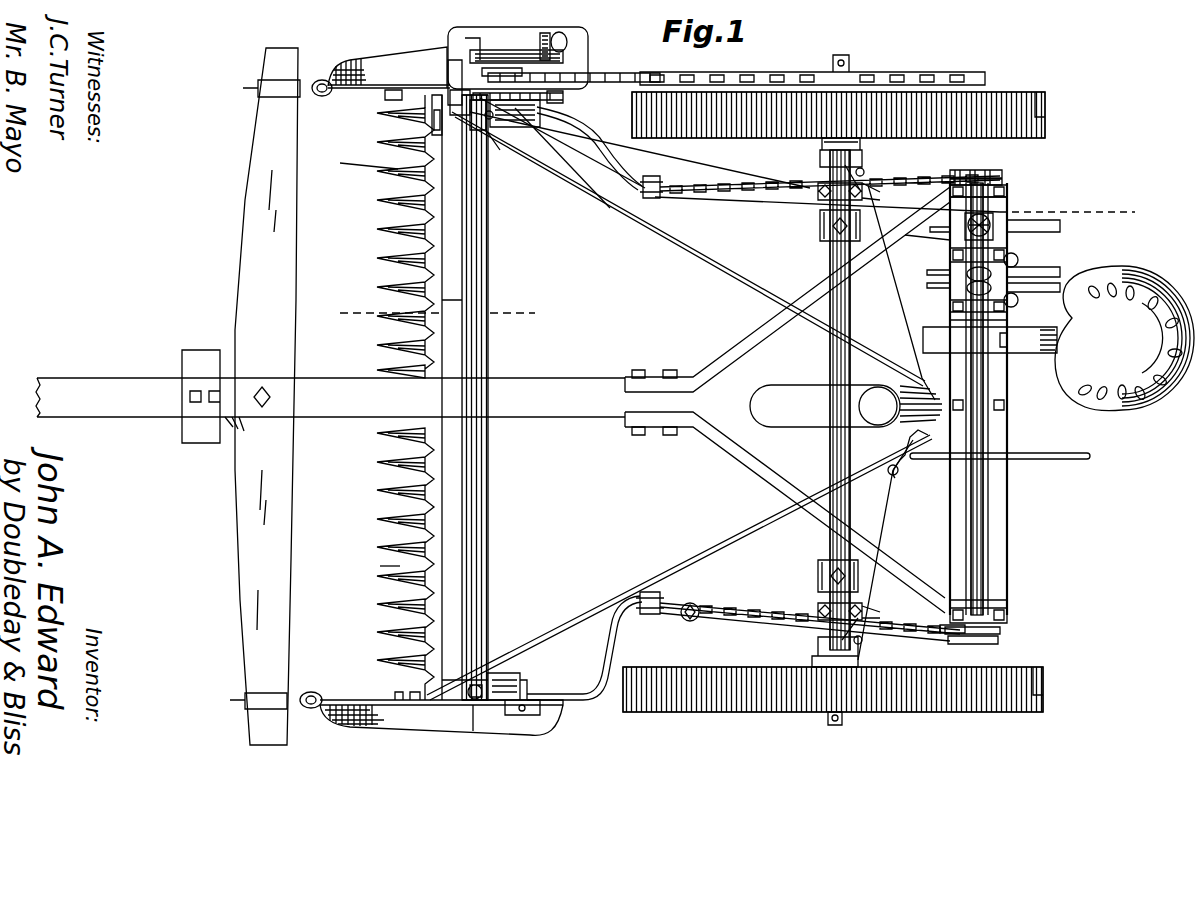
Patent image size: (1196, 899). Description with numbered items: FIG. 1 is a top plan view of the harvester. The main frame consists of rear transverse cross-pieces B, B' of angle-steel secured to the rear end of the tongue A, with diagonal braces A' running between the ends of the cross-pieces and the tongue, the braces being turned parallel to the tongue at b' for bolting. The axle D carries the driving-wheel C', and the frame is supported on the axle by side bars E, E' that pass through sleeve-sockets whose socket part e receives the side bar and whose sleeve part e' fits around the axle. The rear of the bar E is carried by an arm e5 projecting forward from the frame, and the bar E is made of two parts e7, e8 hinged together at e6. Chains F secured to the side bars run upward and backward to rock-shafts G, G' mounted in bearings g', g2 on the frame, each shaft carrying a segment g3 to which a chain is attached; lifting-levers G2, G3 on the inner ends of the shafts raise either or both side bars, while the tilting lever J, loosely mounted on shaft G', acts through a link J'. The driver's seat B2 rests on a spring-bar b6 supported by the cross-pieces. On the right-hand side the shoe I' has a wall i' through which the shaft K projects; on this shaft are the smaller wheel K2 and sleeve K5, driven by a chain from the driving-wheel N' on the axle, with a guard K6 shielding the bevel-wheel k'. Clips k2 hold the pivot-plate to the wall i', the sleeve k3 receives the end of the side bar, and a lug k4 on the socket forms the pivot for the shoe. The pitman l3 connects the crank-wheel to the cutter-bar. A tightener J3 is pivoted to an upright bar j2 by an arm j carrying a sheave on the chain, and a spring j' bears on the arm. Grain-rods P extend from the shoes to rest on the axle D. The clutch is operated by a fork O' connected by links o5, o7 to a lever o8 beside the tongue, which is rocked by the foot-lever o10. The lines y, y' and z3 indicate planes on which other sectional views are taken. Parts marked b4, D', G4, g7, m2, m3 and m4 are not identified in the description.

The tongue A is at (330, 387).
The diagonal braces A' is at (787, 400).
The front ends of braces b' is at (654, 408).
The rear transverse cross-piece B is at (986, 404).
The rear transverse cross-piece B' is at (903, 545).
The driver's seat B2 is at (1124, 338).
The bracket b4 is at (997, 355).
The spring-bar b6 is at (1050, 355).
The driving-wheel C' is at (834, 406).
The axle D is at (856, 400).
The shaft bearings D' is at (823, 402).
The side bar E is at (710, 597).
The side bar E' is at (682, 203).
The socket part e is at (826, 401).
The sleeve part e' is at (873, 400).
The arm e5 is at (915, 628).
The hinge e6 is at (690, 606).
The side bar part e7 is at (590, 650).
The side bar part e8 is at (745, 612).
The chains F is at (765, 193).
The rock-shaft G is at (984, 399).
The rock-shaft G' is at (1072, 263).
The lifting-lever G2 is at (950, 300).
The lifting-lever G3 is at (950, 250).
The lever arm G4 is at (1060, 226).
The bearing g' is at (1000, 466).
The bearing g2 is at (1004, 186).
The segment g3 is at (1005, 174).
The bar g7 is at (1007, 204).
The shoe I' is at (441, 392).
The wall of shoe i' is at (510, 60).
The tilting lever J is at (1005, 215).
The link J' is at (640, 150).
The tightener J3 is at (565, 98).
The arm j is at (498, 151).
The spring j' is at (562, 143).
The upright bar j2 is at (482, 68).
The shaft K is at (606, 74).
The smaller wheel K2 is at (556, 33).
The sleeve K5 is at (505, 50).
The shield or guard K6 is at (485, 50).
The bevel-wheel k' is at (471, 131).
The clips k2 is at (560, 112).
The socket or sleeve k3 is at (560, 160).
The lug or pivot k4 is at (528, 712).
The pitman l3 is at (425, 106).
The tine bar m2 is at (490, 262).
The tines m3 is at (425, 126).
The tine m4 is at (422, 566).
The driving-wheel N' is at (812, 65).
The fork O' is at (871, 405).
The link o5 is at (872, 406).
The link o7 is at (876, 540).
The lever o8 is at (903, 479).
The foot-lever o10 is at (1000, 443).
The grain-rods P is at (712, 280).
The section line y is at (827, 210).
The section line y' is at (1072, 209).
The section line z3 is at (436, 313).